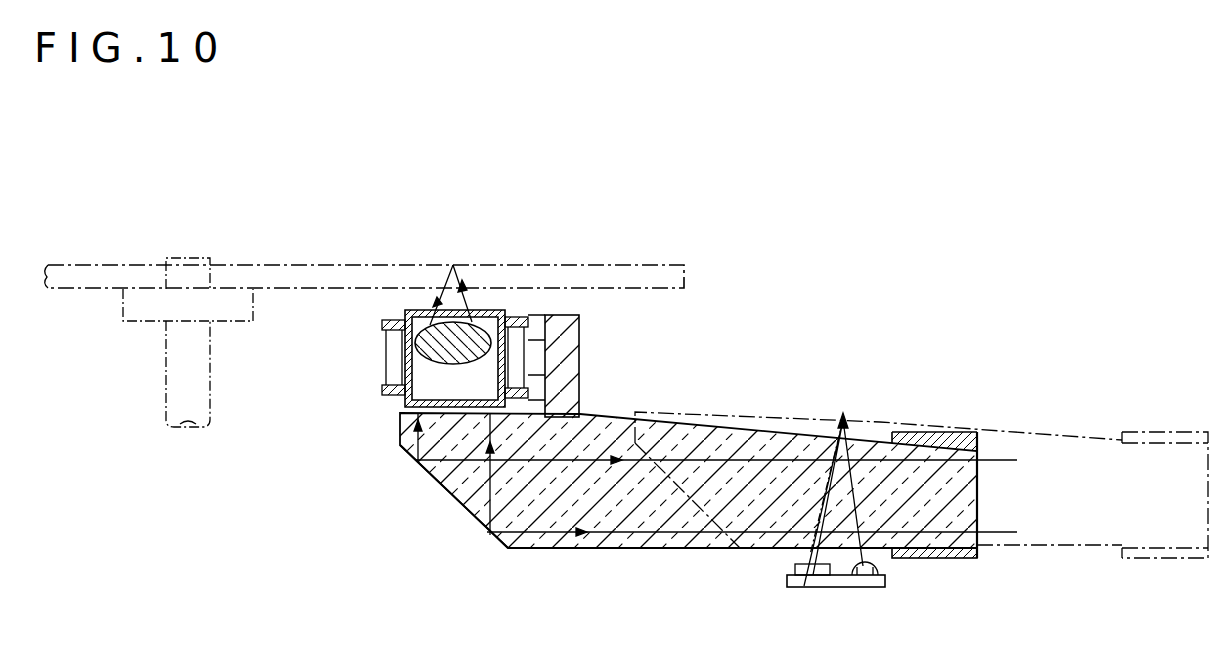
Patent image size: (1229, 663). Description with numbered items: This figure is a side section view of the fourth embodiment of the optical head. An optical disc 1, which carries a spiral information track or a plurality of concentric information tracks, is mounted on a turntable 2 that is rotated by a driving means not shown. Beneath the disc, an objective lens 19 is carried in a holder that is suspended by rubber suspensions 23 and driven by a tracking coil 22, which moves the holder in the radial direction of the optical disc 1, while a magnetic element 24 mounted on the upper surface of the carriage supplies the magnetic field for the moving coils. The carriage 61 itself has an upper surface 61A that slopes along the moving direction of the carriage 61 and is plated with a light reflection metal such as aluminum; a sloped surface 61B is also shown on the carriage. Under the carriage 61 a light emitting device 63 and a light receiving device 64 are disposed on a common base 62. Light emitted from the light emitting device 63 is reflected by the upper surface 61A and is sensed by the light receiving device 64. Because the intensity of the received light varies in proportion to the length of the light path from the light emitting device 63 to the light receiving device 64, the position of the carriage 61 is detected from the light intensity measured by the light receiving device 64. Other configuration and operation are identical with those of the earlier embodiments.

The optical disc 1 is at (548, 277).
The turntable 2 is at (185, 267).
The objective lens 19 is at (458, 322).
The tracking coil 22 is at (386, 320).
The rubber suspension 23 is at (421, 310).
The magnetic element 24 is at (590, 355).
The carriage 61 is at (598, 550).
The upper surface 61A is at (693, 412).
The reflecting surface 61B is at (448, 492).
The substrate 62 is at (893, 583).
The light emitting device 63 is at (866, 586).
The light receiving device 64 is at (805, 586).